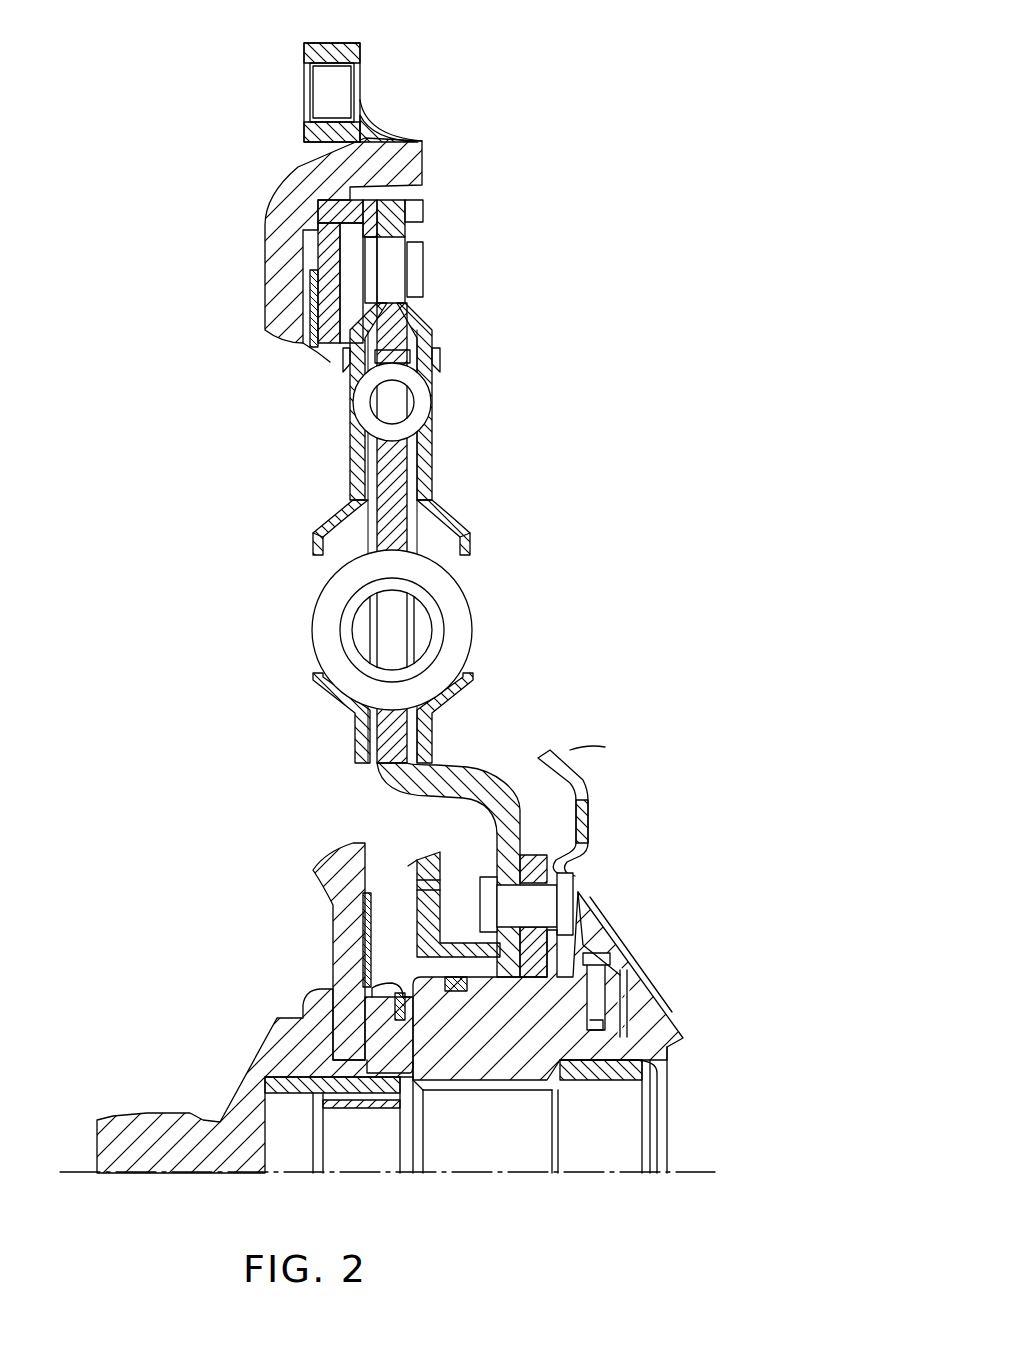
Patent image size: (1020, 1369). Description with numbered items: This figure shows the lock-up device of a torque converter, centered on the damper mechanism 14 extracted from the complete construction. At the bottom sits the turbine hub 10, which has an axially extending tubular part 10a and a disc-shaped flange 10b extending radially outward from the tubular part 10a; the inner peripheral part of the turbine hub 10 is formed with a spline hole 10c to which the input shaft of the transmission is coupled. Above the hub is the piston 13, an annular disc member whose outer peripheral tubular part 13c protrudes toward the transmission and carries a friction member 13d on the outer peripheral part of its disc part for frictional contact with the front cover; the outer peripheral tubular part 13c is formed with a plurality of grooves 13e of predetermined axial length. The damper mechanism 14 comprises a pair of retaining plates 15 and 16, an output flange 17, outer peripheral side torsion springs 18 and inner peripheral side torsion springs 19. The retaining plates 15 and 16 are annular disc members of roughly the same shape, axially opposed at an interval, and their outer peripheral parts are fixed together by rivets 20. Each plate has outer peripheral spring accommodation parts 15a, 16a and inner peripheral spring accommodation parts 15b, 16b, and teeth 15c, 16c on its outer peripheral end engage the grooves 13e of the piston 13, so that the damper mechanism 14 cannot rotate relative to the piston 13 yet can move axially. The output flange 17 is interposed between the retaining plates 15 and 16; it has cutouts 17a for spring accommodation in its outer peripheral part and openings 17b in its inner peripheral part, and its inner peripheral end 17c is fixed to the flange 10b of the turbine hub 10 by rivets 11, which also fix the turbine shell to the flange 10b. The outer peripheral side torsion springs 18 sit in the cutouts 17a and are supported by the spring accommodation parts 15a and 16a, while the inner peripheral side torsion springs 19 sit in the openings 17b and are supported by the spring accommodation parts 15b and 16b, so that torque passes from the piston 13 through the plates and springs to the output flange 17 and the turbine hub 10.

The turbine hub 10 is at (606, 1095).
The tubular part 10a is at (520, 1017).
The flange 10b is at (528, 965).
The spline hole 10c is at (515, 1082).
The rivets 11 is at (570, 882).
The piston 13 is at (318, 237).
The outer peripheral tubular part 13c is at (357, 205).
The friction member 13d is at (317, 318).
The grooves 13e is at (417, 213).
The damper mechanism 14 is at (545, 491).
The retaining plate 15 is at (352, 316).
The spring accommodation parts 15a is at (350, 368).
The spring accommodation parts 15b is at (333, 548).
The teeth 15c is at (382, 203).
The retaining plate 16 is at (436, 316).
The spring accommodation parts 16a is at (432, 370).
The spring accommodation parts 16b is at (447, 547).
The teeth 16c is at (400, 227).
The output flange 17 is at (407, 470).
The cutouts 17a is at (387, 405).
The openings 17b is at (393, 623).
The inner peripheral end 17c is at (493, 850).
The outer peripheral side torsion springs 18 is at (422, 408).
The inner peripheral side torsion springs 19 is at (323, 626).
The rivets 20 is at (418, 283).